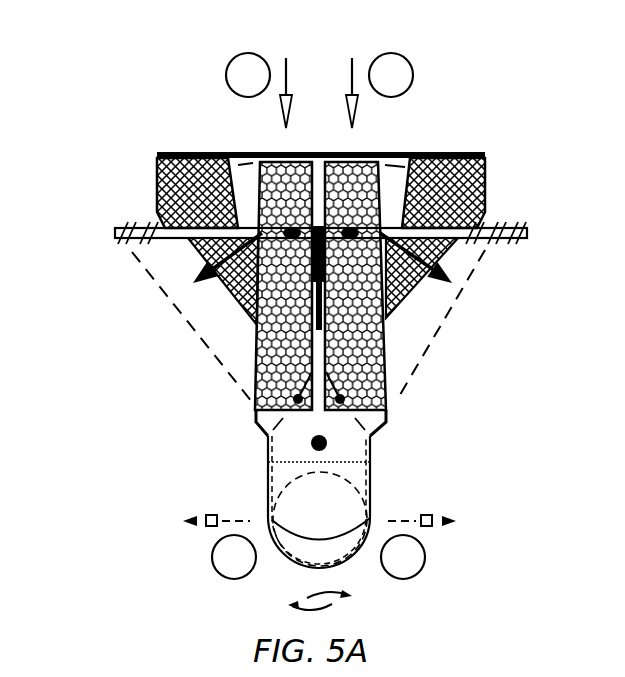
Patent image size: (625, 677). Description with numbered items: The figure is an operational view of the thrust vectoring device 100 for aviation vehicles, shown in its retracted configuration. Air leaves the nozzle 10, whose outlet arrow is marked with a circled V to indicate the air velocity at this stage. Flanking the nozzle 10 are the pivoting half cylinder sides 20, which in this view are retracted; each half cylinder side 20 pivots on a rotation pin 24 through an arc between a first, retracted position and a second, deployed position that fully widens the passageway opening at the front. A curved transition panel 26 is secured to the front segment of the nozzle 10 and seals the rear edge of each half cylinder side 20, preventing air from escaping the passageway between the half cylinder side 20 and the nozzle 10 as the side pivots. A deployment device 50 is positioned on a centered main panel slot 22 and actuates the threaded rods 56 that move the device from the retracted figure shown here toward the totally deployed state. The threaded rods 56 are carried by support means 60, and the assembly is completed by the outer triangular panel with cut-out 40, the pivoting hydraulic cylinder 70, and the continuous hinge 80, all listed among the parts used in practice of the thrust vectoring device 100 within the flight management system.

The thrust vectoring device 100 is at (176, 122).
The continuous hinge 80 is at (470, 150).
The support means 60 is at (483, 173).
The threaded rod 56 is at (476, 256).
The deployment device 50 is at (309, 222).
The pivoting half cylinder side 20 is at (228, 297).
The main panel slot 22 is at (378, 328).
The rotation pin 24 is at (375, 394).
The outer triangular panel with cut-out 40 is at (405, 292).
The curved transition panel 26 is at (262, 430).
The pivoting hydraulic cylinder 70 is at (312, 445).
The nozzle 10 is at (318, 493).